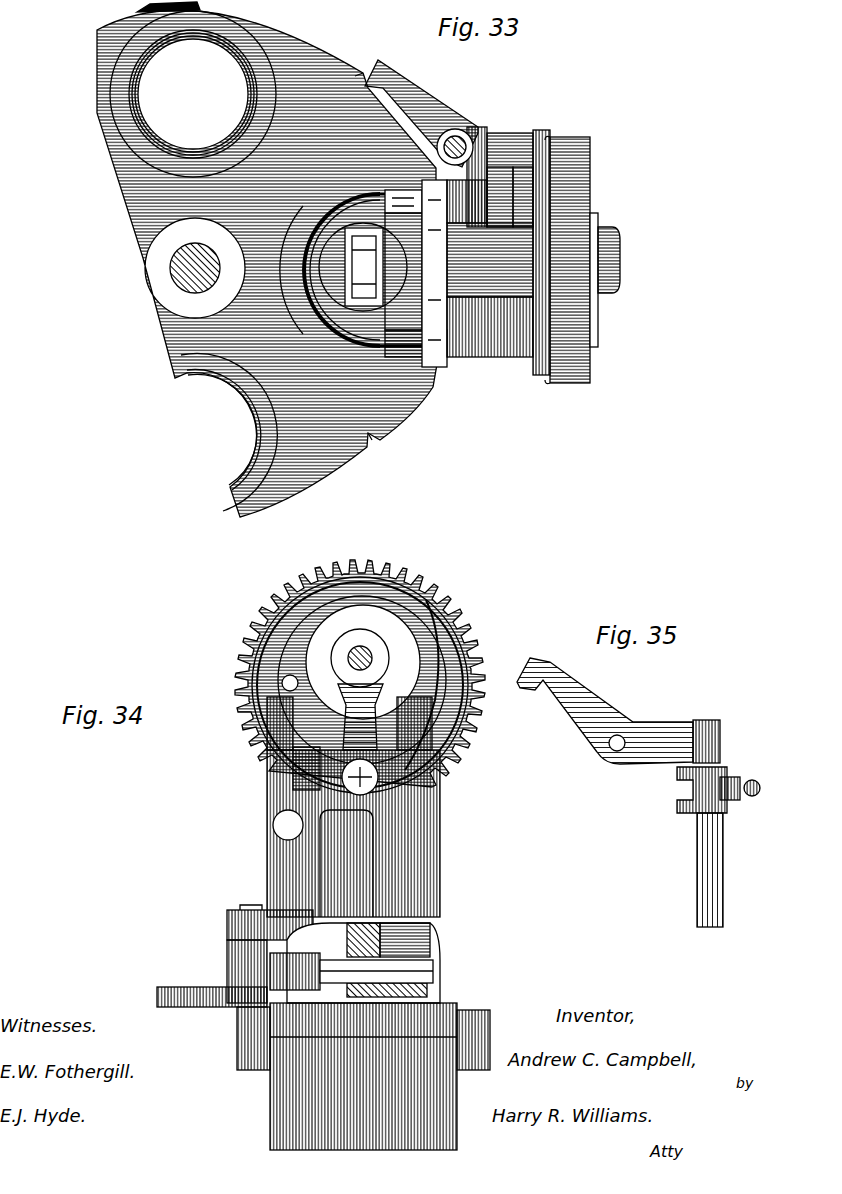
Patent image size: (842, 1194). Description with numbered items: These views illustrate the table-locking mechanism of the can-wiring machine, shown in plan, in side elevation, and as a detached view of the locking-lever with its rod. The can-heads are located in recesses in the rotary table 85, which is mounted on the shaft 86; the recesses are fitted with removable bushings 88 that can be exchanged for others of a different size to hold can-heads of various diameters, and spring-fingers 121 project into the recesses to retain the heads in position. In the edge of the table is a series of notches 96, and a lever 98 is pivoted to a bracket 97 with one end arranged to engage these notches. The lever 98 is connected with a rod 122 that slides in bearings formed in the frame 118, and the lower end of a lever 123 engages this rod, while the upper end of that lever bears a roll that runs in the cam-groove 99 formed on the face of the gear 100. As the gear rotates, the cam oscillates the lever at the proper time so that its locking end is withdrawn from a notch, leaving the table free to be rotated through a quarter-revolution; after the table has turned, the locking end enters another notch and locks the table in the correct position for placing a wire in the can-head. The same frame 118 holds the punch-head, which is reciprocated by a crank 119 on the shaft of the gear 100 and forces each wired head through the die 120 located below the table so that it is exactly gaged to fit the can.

In FIG. 33, the table 85 is at (123, 195).
In FIG. 33, the shaft 86 is at (180, 268).
In FIG. 33, the bushings 88 is at (115, 102).
In FIG. 33, the notches 96 is at (370, 73).
In FIG. 33, the bracket 97 is at (482, 126).
In FIG. 34, the bracket 97 is at (237, 935).
In FIG. 35, the bracket 97 is at (718, 766).
In FIG. 33, the lever 98 is at (422, 110).
In FIG. 34, the lever 98 is at (185, 986).
In FIG. 35, the lever 98 is at (572, 716).
In FIG. 33, the cam 99 is at (528, 368).
In FIG. 34, the cam 99 is at (437, 598).
In FIG. 33, the gear 100 is at (595, 372).
In FIG. 34, the gear 100 is at (262, 606).
In FIG. 33, the frame 118 is at (475, 192).
In FIG. 34, the frame 118 is at (327, 870).
In FIG. 33, the crank 119 is at (340, 268).
In FIG. 34, the crank 119 is at (268, 641).
In FIG. 34, the die 120 is at (300, 1105).
In FIG. 33, the spring-fingers 121 is at (192, 38).
In FIG. 33, the rod 122 is at (560, 132).
In FIG. 34, the rod 122 is at (432, 966).
In FIG. 35, the rod 122 is at (697, 862).
In FIG. 33, the lever 123 is at (540, 190).
In FIG. 34, the lever 123 is at (285, 772).